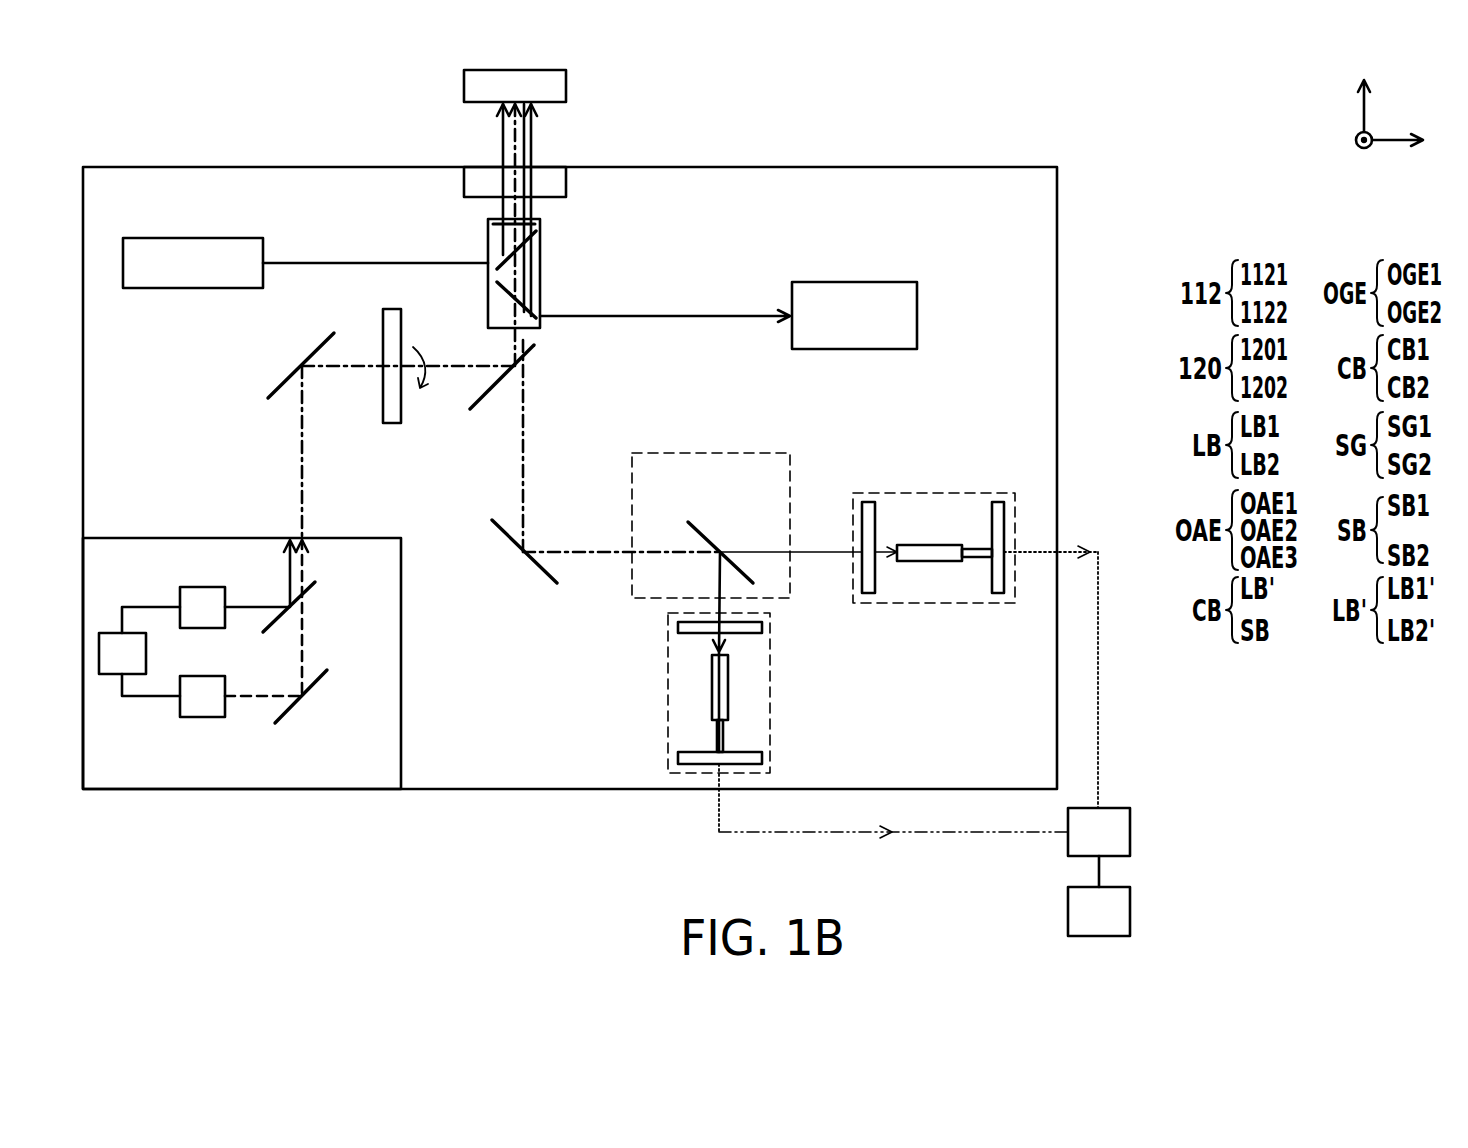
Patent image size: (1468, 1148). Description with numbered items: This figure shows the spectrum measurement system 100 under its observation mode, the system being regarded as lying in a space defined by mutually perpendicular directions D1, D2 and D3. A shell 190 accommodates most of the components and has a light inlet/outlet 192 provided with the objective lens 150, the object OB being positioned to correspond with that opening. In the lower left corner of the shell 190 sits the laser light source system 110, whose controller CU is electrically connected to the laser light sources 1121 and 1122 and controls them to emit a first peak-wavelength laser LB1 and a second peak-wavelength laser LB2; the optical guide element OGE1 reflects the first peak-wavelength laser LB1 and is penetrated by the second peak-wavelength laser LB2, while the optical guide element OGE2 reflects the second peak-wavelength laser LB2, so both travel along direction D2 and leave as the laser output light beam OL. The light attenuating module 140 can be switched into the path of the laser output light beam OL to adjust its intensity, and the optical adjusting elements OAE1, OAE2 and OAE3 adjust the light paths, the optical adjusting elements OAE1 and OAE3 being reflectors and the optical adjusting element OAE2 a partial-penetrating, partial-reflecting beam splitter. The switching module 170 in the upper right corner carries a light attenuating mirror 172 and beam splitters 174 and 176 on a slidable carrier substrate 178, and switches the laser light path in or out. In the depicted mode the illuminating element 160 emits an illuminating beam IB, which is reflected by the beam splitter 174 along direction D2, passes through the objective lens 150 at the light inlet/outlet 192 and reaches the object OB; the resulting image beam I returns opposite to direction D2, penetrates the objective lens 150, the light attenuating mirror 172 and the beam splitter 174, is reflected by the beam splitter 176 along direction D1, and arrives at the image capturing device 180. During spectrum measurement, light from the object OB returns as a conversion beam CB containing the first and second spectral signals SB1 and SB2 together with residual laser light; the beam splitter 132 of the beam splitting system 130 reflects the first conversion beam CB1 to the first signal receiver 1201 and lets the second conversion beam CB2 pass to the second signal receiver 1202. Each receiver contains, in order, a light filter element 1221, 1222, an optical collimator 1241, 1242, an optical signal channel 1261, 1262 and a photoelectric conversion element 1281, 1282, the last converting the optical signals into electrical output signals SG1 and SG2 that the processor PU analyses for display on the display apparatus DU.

The spectrum measurement system 100 is at (758, 525).
The laser light source system 110 is at (272, 695).
The laser light source 1121 is at (192, 587).
The laser light source 1122 is at (180, 705).
The beam splitting system 130 is at (711, 500).
The beam splitter 132 is at (698, 525).
The light attenuating module 140 is at (393, 423).
The objective lens 150 is at (464, 185).
The illuminating element 160 is at (195, 238).
The switching module 170 is at (528, 310).
The light attenuating mirror 172 is at (535, 222).
The beam splitter 174 is at (518, 250).
The beam splitter 176 is at (505, 290).
The carrier substrate 178 is at (582, 336).
The image capturing device 180 is at (855, 282).
The shell 190 is at (230, 167).
The light inlet/outlet 192 is at (474, 142).
The first signal receiver 1201 is at (676, 689).
The second signal receiver 1202 is at (934, 529).
The light filter element 1221 is at (680, 627).
The light filter element 1222 is at (865, 527).
The optical collimator 1241 is at (712, 690).
The optical collimator 1242 is at (933, 550).
The optical signal channel 1261 is at (717, 735).
The optical signal channel 1262 is at (978, 553).
The photoelectric conversion element 1281 is at (680, 757).
The photoelectric conversion element 1282 is at (1000, 520).
The controller CU is at (146, 654).
The processor PU is at (1099, 847).
The display apparatus DU is at (1099, 911).
The object OB is at (464, 88).
The conversion beam CB is at (531, 140).
The illuminating beam IB is at (448, 263).
The image beam I is at (665, 299).
The laser output light beam OL is at (300, 455).
The optical adjusting element OAE1 is at (305, 342).
The optical adjusting element OAE2 is at (478, 402).
The optical adjusting element OAE3 is at (538, 572).
The optical guide element OGE1 is at (313, 592).
The optical guide element OGE2 is at (298, 708).
The first peak-wavelength laser LB1 is at (270, 572).
The second peak-wavelength laser LB2 is at (280, 665).
The first conversion beam CB1 is at (719, 575).
The second conversion beam CB2 is at (760, 552).
The first spectral signal SB1 is at (719, 636).
The second spectral signal SB2 is at (878, 552).
The electrical output signal SG1 is at (893, 817).
The electrical output signal SG2 is at (1058, 662).
The direction D1 is at (1415, 141).
The direction D2 is at (1364, 90).
The direction D3 is at (1364, 163).